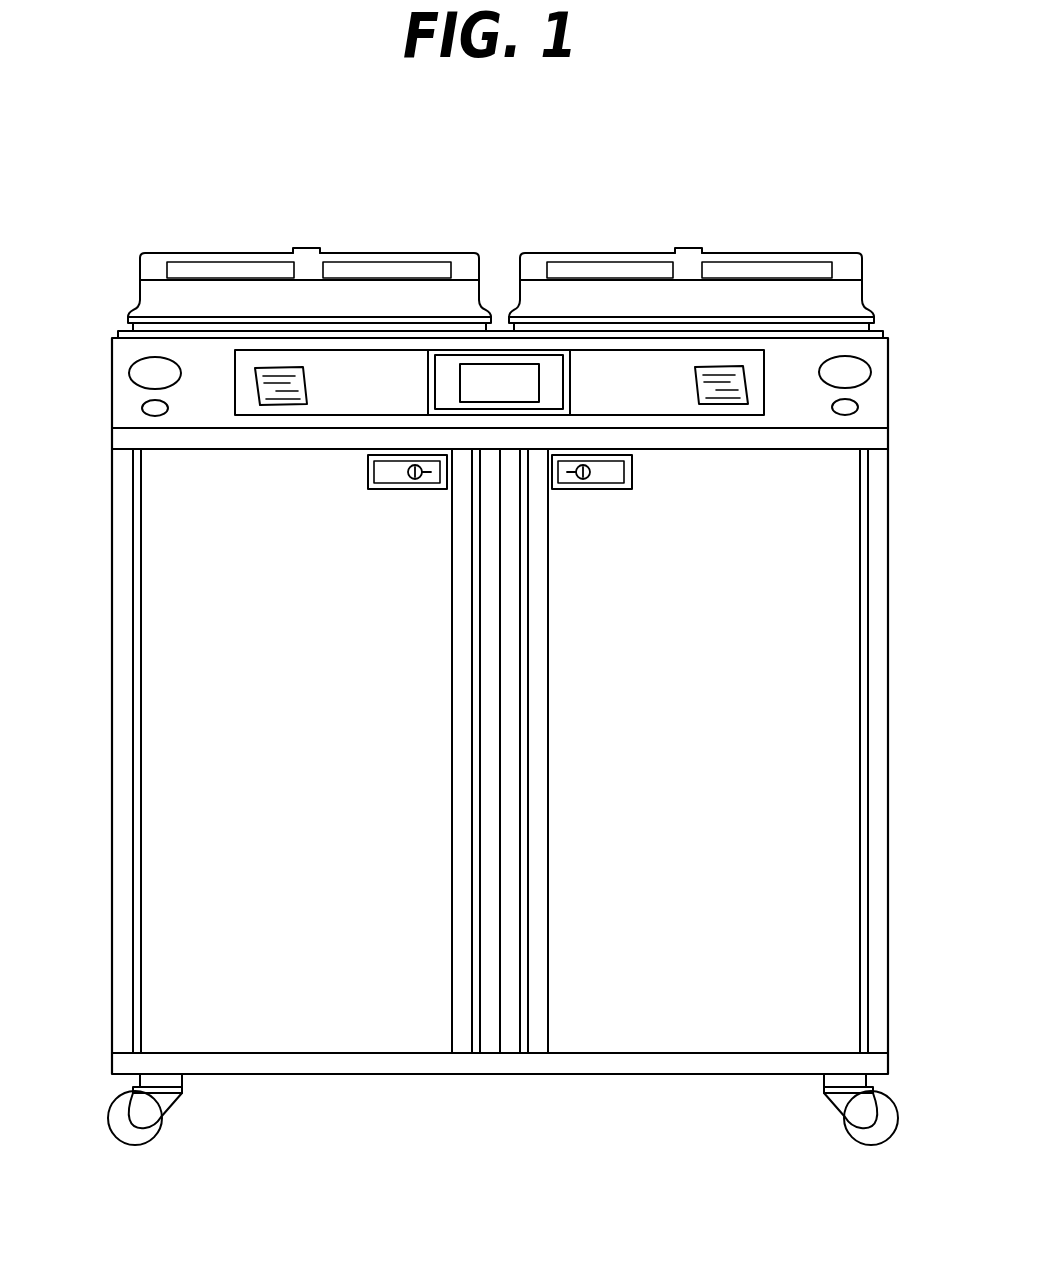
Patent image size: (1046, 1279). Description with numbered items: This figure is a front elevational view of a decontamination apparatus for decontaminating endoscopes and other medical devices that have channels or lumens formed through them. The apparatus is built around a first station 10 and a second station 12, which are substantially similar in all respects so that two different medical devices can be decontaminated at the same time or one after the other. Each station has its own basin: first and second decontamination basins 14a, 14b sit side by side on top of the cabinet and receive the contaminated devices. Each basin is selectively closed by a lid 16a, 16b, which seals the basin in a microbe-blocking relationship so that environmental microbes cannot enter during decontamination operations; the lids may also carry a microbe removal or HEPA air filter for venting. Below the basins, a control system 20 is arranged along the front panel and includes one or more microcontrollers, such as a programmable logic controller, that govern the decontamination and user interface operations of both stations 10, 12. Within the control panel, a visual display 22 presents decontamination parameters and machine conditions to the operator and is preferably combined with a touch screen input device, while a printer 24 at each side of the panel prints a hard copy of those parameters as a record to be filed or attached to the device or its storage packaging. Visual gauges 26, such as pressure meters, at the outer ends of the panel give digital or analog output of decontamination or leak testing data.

The first station 10 is at (310, 219).
The second station 12 is at (689, 219).
The first decontamination basin 14a is at (309, 227).
The second decontamination basin 14b is at (691, 229).
The lid 16a is at (312, 247).
The lid 16b is at (682, 248).
The control system 20 is at (499, 428).
The visual display 22 is at (478, 382).
The printer 24 is at (307, 388).
The visual gauge 26 is at (147, 373).